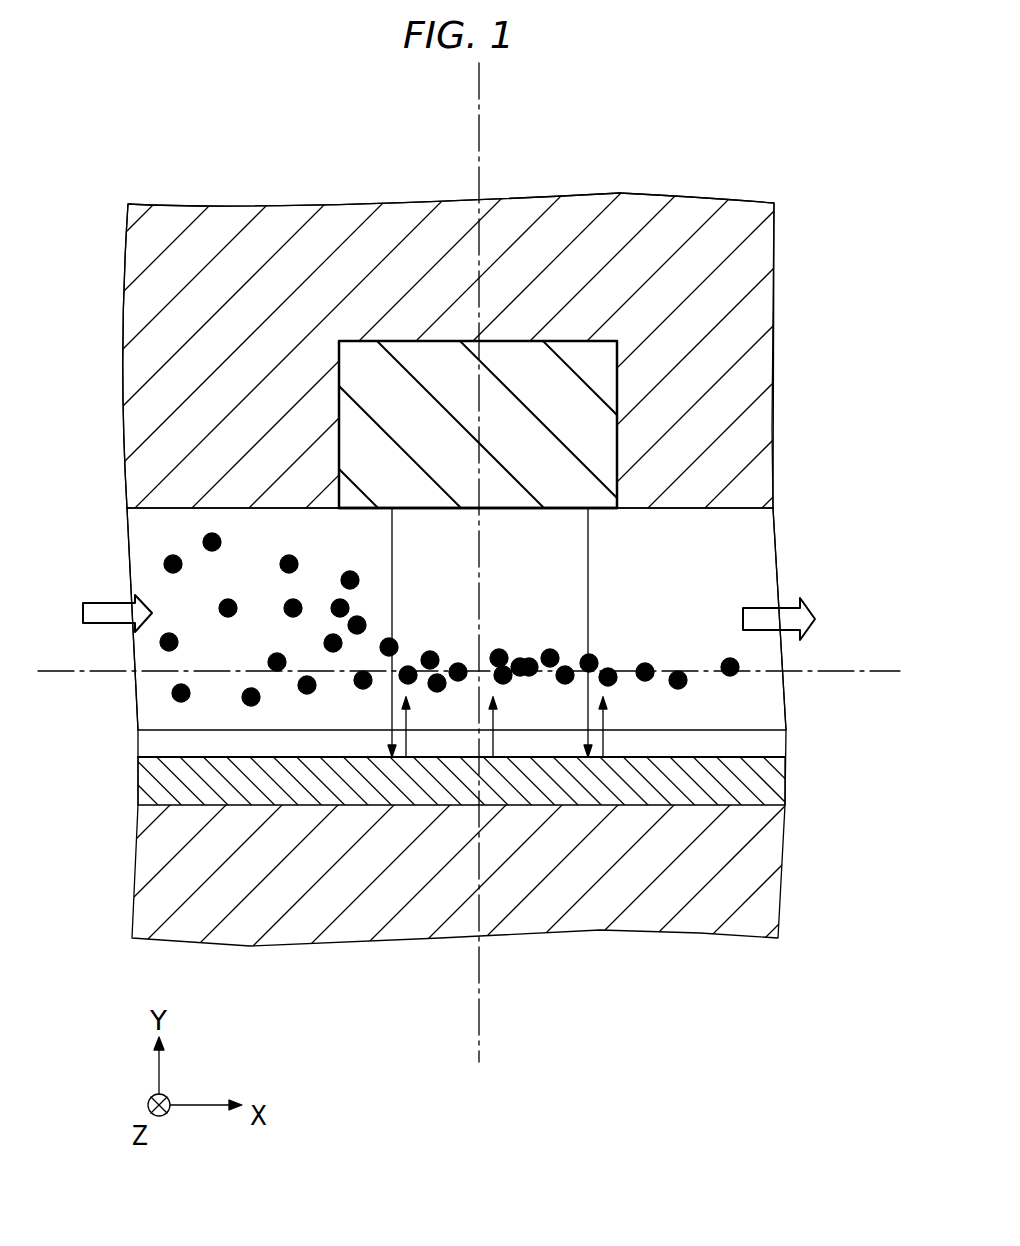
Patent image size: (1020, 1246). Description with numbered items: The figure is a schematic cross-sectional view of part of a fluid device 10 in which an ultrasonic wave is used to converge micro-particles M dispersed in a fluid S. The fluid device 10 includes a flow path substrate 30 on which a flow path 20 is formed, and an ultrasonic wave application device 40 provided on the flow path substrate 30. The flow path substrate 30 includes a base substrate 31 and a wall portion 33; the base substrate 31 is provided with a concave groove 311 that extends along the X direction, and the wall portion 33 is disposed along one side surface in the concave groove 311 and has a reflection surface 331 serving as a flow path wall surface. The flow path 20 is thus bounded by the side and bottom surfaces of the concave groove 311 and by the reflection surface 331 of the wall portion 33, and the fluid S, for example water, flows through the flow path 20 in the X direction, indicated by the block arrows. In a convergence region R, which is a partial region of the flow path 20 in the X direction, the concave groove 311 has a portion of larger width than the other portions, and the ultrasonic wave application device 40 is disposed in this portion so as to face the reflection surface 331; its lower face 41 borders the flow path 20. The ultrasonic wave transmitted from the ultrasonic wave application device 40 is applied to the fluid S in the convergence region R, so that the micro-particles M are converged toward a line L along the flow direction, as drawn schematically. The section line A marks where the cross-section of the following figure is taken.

The fluid device 10 is at (716, 158).
The flow path 20 is at (765, 570).
The flow path substrate 30 is at (258, 208).
The base substrate 31 is at (140, 433).
The concave groove 311 is at (750, 508).
The wall portion 33 is at (158, 785).
The reflection surface 331 is at (767, 757).
The ultrasonic wave application device 40 is at (580, 398).
The bottom surface of protrusion 41 is at (358, 508).
The micro-particles M is at (164, 566).
The convergence region R is at (645, 583).
The fluid S is at (449, 617).
The axis line L is at (877, 670).
The line A- A is at (480, 92).